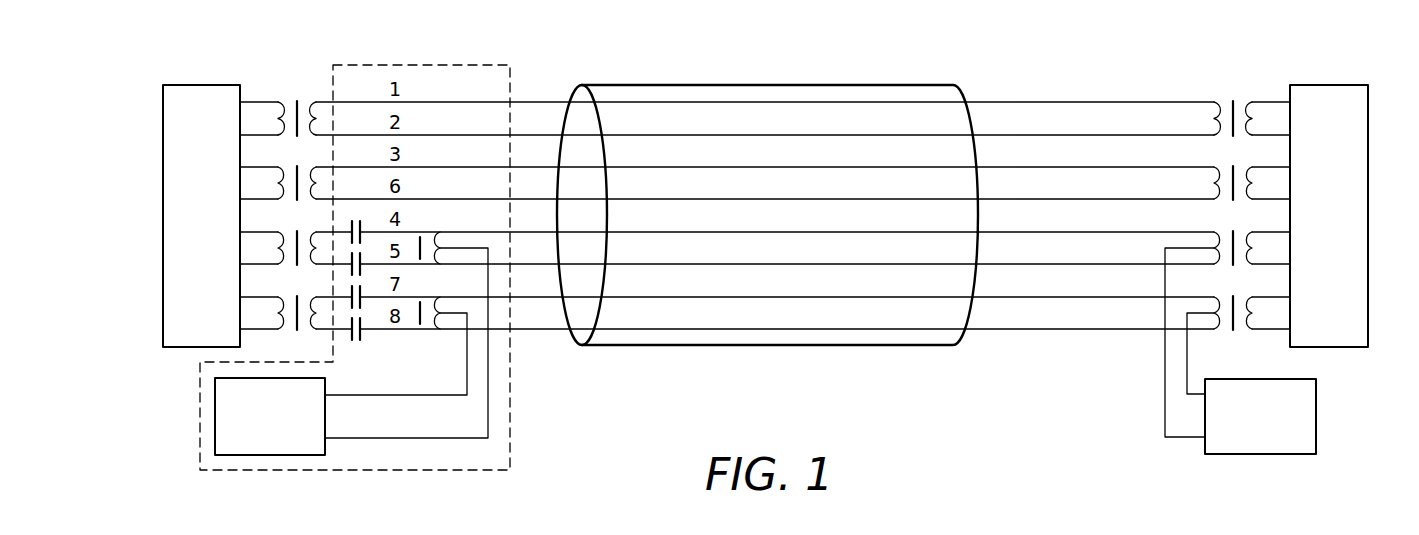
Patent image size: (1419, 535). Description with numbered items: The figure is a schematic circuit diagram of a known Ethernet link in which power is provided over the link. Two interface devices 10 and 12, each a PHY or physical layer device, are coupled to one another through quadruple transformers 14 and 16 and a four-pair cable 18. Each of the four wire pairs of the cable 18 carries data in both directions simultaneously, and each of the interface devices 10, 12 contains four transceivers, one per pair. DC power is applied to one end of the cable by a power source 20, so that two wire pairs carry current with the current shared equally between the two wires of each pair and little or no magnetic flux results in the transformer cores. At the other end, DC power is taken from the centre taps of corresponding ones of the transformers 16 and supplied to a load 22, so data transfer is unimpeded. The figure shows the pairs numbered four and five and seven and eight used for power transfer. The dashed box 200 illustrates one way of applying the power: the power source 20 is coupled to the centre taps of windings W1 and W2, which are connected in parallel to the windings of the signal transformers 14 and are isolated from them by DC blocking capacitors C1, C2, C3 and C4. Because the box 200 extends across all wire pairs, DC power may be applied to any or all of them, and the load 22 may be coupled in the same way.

The interface device 10 is at (218, 85).
The interface device 12 is at (1343, 85).
The quadruple transformers 14 is at (296, 86).
The quadruple transformers 16 is at (1237, 86).
The 4-pair cable 18 is at (765, 85).
The power source 20 is at (215, 390).
The load 22 is at (1316, 392).
The dashed box 200 is at (512, 452).
The DC blocking capacitor C1 is at (352, 219).
The DC blocking capacitor C2 is at (347, 270).
The DC blocking capacitor C3 is at (362, 308).
The DC blocking capacitor C4 is at (354, 341).
The winding W1 is at (444, 331).
The winding W2 is at (448, 232).